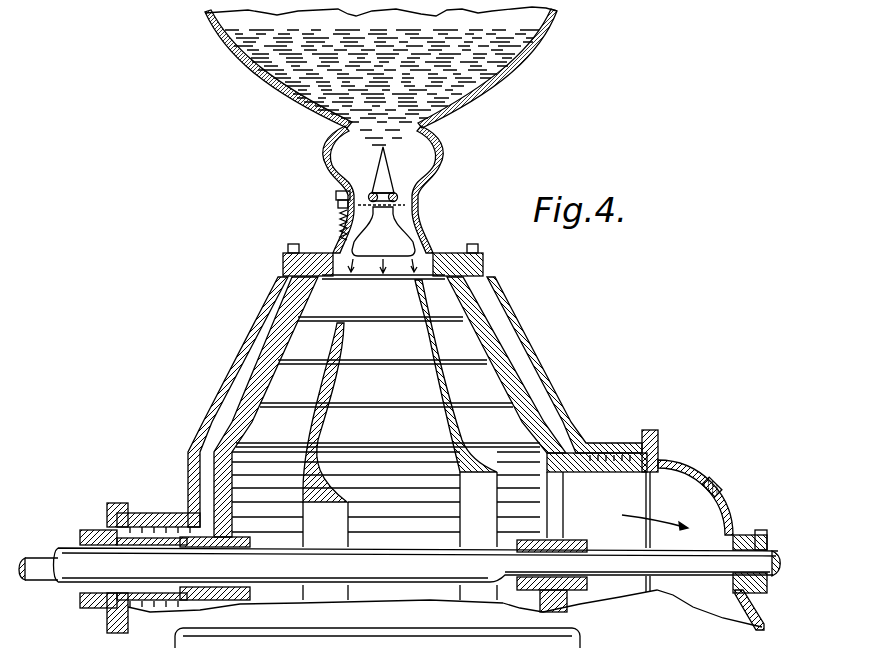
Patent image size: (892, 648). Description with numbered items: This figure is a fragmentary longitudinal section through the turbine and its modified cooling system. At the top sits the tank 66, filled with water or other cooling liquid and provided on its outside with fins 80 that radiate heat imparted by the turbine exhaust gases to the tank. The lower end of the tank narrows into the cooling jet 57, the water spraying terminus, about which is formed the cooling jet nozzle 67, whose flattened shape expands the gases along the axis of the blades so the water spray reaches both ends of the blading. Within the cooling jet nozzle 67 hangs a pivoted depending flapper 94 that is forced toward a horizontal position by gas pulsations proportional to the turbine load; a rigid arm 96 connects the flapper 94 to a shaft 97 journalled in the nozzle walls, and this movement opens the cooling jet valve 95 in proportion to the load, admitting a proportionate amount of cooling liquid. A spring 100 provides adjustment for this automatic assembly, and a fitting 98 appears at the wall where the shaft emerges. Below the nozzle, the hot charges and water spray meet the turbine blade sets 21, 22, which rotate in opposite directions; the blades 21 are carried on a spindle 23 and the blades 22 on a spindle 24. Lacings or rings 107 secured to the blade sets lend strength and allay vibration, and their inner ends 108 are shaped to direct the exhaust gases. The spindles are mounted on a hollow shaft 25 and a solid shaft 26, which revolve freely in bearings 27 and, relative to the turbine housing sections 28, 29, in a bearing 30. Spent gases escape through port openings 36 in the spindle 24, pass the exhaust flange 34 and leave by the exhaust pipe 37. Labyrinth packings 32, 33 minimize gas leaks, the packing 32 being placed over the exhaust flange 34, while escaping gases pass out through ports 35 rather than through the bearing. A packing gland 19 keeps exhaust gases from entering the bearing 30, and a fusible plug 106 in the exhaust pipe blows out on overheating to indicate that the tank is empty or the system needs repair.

The tank 66 is at (536, 28).
The fins 80 is at (537, 58).
The cooling jet 57 is at (430, 168).
The cooling jet valve 95 is at (407, 183).
The rigid arm 96 is at (401, 198).
The flapper 94 is at (430, 225).
The cooling jet nozzle 67 is at (348, 172).
The fitting 98 is at (338, 193).
The shaft 97 is at (340, 203).
The spring 100 is at (340, 227).
The spindle 23 is at (280, 325).
The spindle 24 is at (495, 330).
The turbine housing section 28 is at (235, 364).
The turbine housing section 29 is at (532, 358).
The exhaust flange 34 is at (591, 451).
The labyrinth packing 32 is at (621, 452).
The exhaust pipe 37 is at (684, 463).
The fusible plug 106 is at (722, 486).
The packing gland 19 is at (755, 535).
The shaft 26 is at (37, 558).
The port openings 36 is at (555, 515).
The inner ends 108 is at (400, 536).
The lacings or rings 107 is at (328, 352).
The turbine blade set 21 is at (382, 335).
The turbine blade set 22 is at (388, 382).
The bearings 27 is at (498, 568).
The shaft 25 is at (416, 565).
The bearing 30 is at (727, 580).
The labyrinth packing 33 is at (157, 517).
The ports 35 is at (107, 525).